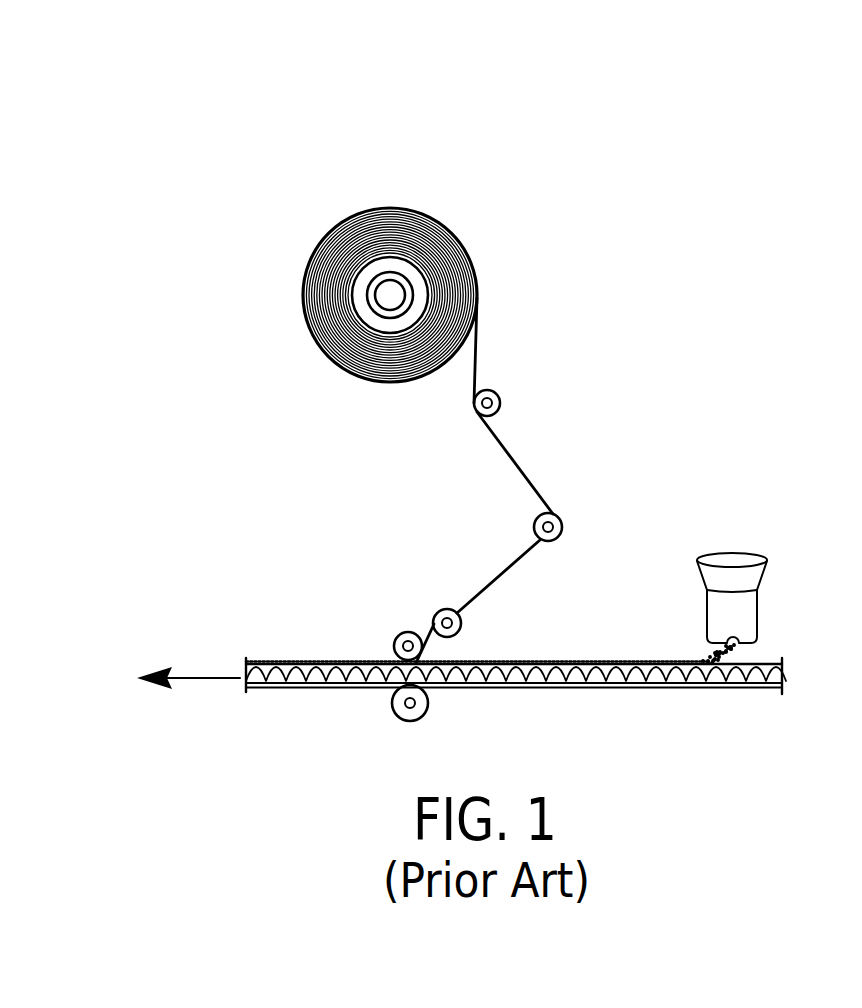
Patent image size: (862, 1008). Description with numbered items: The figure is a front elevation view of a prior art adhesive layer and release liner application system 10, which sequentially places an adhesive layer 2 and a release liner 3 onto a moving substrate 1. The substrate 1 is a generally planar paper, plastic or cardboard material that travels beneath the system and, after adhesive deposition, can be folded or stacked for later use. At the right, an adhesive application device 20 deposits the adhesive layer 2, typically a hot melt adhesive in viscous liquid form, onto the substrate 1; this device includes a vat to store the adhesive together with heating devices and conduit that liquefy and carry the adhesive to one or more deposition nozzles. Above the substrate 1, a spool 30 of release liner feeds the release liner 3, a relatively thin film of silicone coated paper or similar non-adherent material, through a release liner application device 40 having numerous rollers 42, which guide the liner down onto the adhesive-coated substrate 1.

The adhesive layer and release liner application system 10 is at (292, 146).
The spool of release liner 30 is at (452, 243).
The rollers 42 is at (500, 395).
The release liner 3 is at (518, 468).
The release liner application device 40 is at (422, 623).
The substrate 1 is at (290, 688).
The adhesive layer 2 is at (633, 663).
The adhesive application device 20 is at (744, 617).